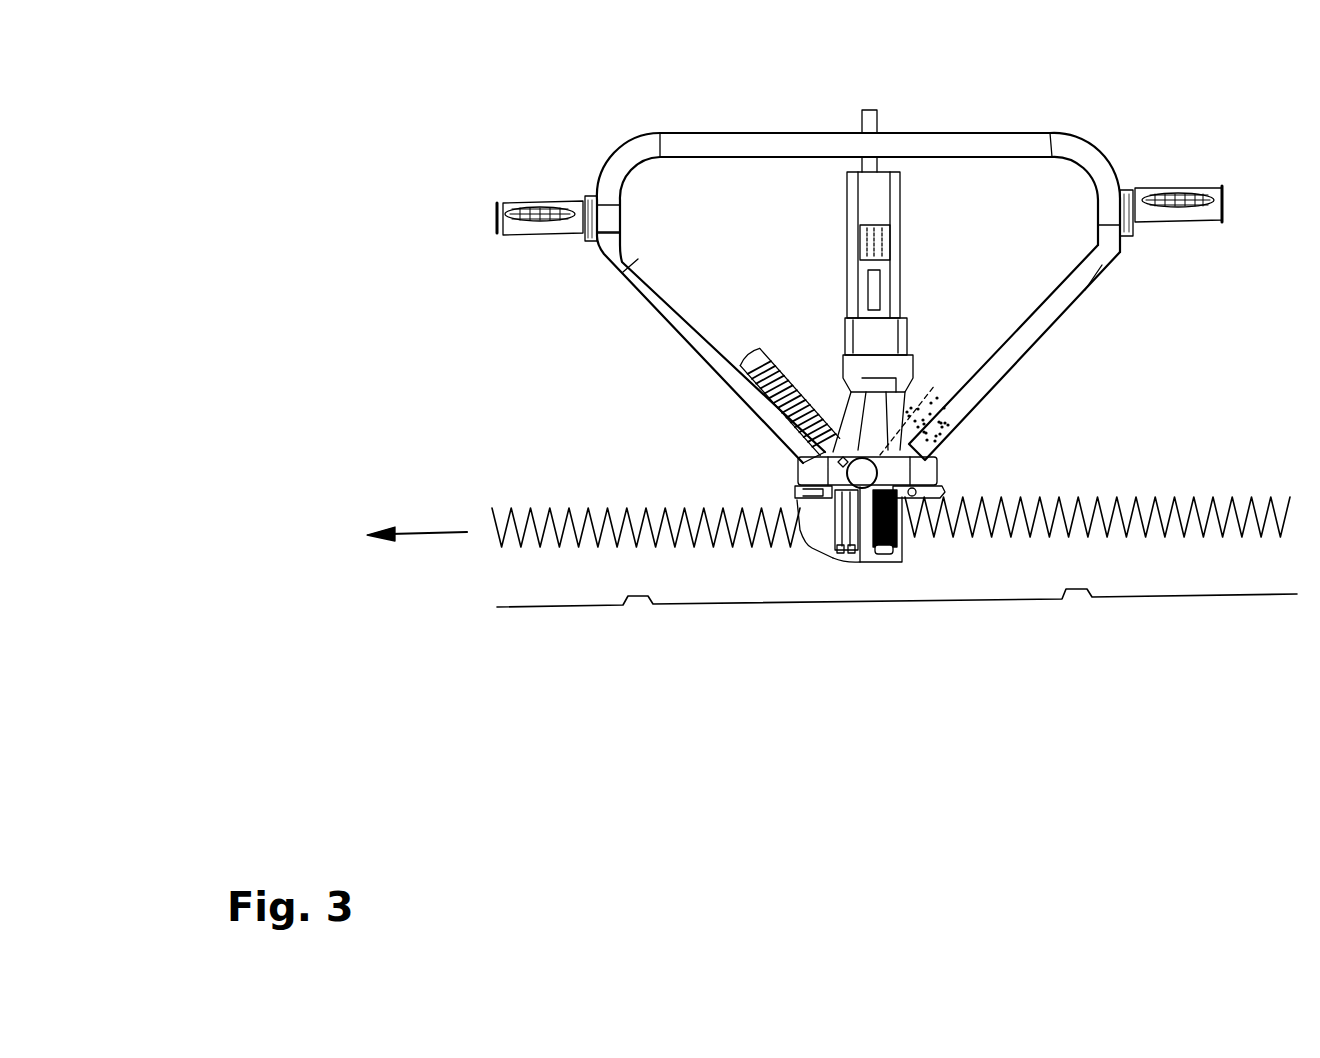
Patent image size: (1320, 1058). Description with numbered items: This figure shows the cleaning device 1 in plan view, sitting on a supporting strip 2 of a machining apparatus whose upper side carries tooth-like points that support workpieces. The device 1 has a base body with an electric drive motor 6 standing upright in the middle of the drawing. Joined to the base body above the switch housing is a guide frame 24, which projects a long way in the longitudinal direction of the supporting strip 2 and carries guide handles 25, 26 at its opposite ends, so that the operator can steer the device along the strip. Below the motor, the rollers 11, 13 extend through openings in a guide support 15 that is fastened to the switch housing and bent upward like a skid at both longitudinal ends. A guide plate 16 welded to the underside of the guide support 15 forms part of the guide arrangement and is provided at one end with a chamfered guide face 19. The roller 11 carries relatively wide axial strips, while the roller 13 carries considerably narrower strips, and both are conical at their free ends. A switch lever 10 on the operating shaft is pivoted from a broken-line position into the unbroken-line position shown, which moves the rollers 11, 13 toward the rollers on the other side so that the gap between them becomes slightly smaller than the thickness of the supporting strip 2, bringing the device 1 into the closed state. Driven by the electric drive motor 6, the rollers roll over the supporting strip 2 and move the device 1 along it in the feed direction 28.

The device 1 is at (879, 237).
The supporting strip 2 is at (1278, 585).
The electric drive motor 6 is at (848, 272).
The switch lever 10 is at (750, 388).
The roller 11 is at (838, 558).
The roller 13 is at (891, 560).
The guide support 15 is at (941, 492).
The guide plate 16 is at (808, 562).
The chamfered guide face 19 is at (810, 550).
The guide frame 24 is at (1057, 310).
The guide handle 25 is at (1190, 193).
The guide handle 26 is at (543, 203).
The feed direction 28 is at (430, 530).